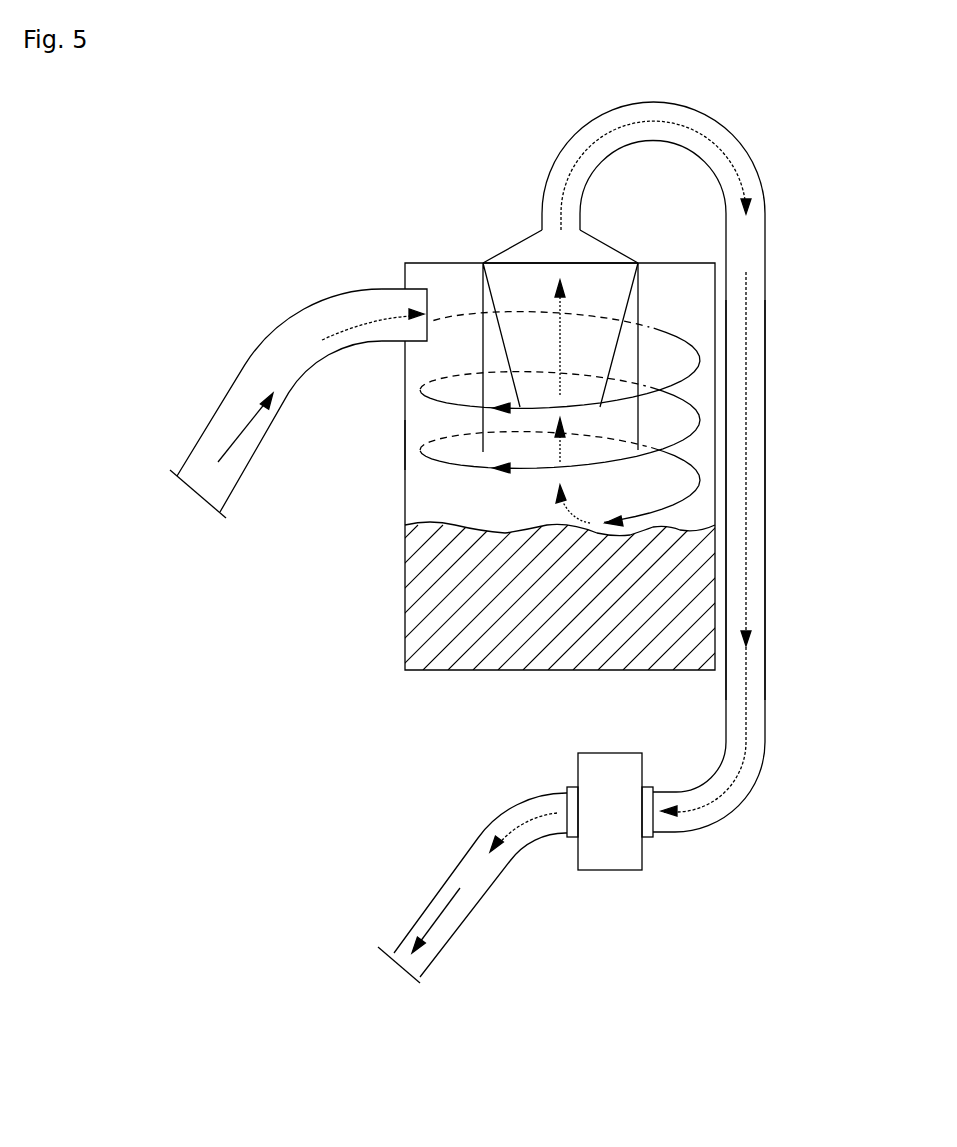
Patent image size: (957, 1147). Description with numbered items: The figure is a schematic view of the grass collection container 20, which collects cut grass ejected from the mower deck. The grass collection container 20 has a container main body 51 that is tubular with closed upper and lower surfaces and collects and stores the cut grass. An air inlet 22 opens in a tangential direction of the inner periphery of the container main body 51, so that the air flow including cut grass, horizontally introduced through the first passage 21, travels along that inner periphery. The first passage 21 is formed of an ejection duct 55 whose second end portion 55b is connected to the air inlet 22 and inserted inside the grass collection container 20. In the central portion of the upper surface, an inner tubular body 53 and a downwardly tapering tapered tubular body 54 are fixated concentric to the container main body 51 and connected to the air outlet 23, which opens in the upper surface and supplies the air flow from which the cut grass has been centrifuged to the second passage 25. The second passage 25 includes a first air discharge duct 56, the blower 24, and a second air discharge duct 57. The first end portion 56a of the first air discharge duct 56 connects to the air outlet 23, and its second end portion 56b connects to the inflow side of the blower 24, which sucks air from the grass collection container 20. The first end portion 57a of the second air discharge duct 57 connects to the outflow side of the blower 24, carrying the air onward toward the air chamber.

The grass collection container 20 is at (403, 490).
The first passage 21 is at (229, 352).
The air inlet 22 is at (413, 283).
The air outlet 23 is at (597, 263).
The blower 24 is at (610, 852).
The second passage 25 is at (770, 267).
The container main body 51 is at (404, 443).
The inner tubular body 53 is at (408, 371).
The tapered tubular body 54 is at (640, 305).
The ejection duct 55 is at (282, 376).
The second end portion 55b is at (282, 376).
The first air discharge duct 56 is at (659, 503).
The first end portion 56a is at (508, 248).
The second end portion 56b is at (672, 828).
The second air discharge duct 57 is at (472, 862).
The first end portion 57a is at (543, 793).